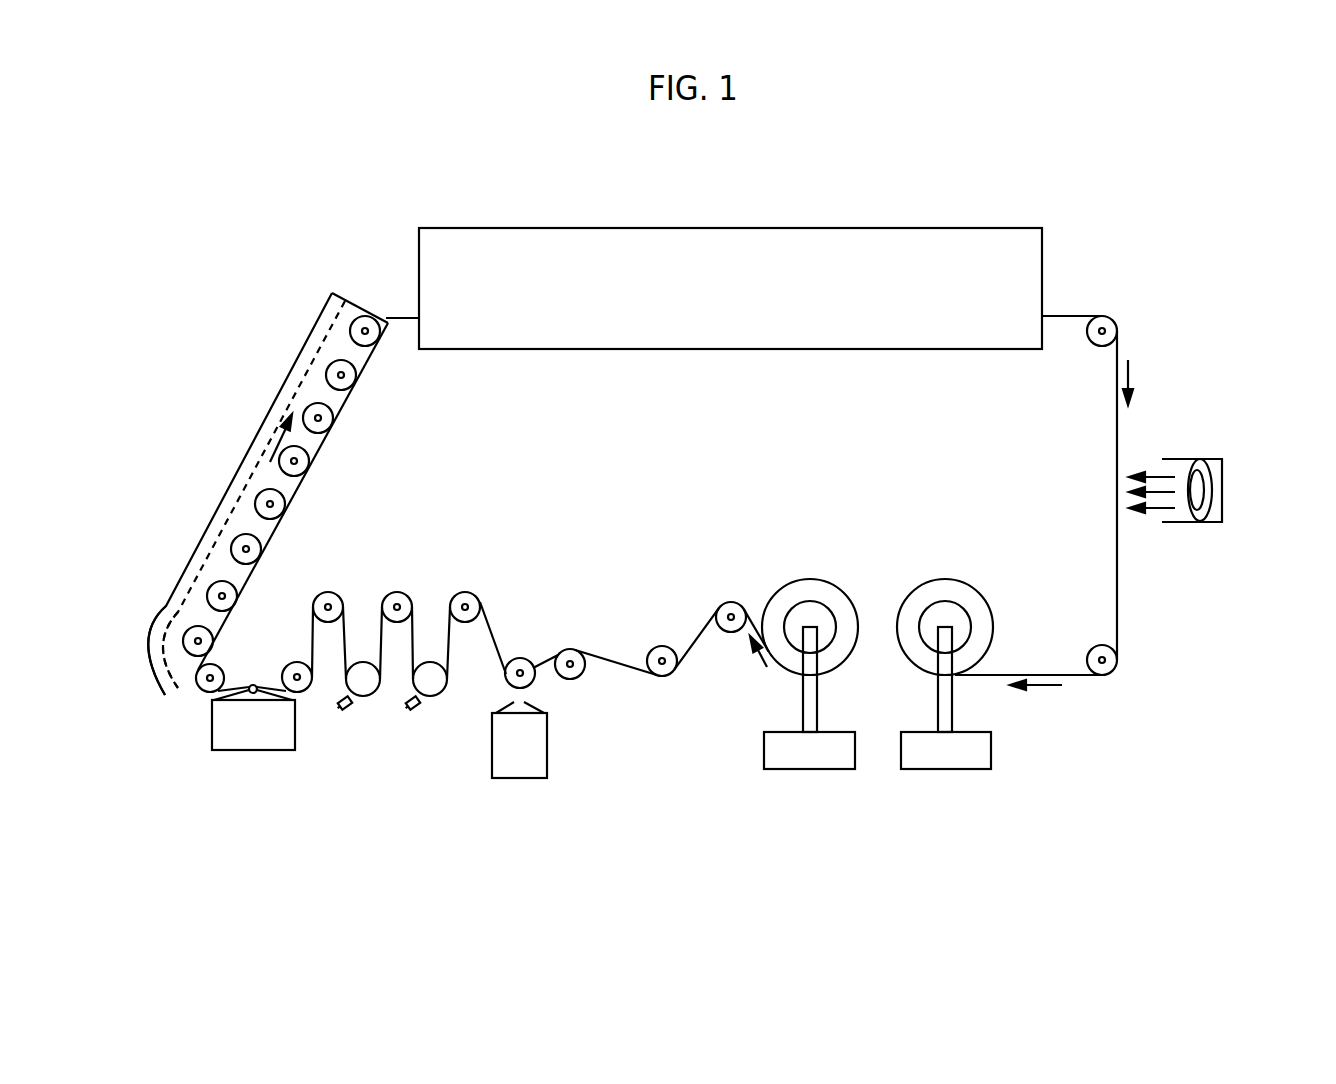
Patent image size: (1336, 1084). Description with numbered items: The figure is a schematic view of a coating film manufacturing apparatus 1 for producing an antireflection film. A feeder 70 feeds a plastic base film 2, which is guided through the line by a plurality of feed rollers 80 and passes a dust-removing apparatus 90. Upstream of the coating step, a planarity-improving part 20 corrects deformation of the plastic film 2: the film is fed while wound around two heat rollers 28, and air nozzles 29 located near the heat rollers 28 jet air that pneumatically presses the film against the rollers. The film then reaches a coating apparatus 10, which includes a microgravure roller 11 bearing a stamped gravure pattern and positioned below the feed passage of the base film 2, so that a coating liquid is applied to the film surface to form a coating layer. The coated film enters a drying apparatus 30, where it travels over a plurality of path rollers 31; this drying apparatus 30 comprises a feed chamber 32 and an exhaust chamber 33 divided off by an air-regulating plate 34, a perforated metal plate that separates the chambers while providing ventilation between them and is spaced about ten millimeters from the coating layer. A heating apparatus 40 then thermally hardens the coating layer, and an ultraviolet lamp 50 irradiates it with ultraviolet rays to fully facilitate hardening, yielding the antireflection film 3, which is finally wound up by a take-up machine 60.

The coating film manufacturing apparatus 1 is at (665, 823).
The base film 2 is at (693, 640).
The antireflection film 3 is at (1118, 590).
The coating apparatus 10 is at (245, 745).
The microgravure roller 11 is at (250, 692).
The planarity-improving part 20 is at (383, 800).
The heat rollers 28 is at (362, 685).
The air nozzles 29 is at (333, 707).
The drying apparatus 30 is at (245, 452).
The path rollers 31 is at (378, 340).
The feed chamber 32 is at (228, 524).
The exhaust chamber 33 is at (178, 596).
The air-regulating plate 34 is at (162, 638).
The heating apparatus 40 is at (777, 238).
The ultraviolet lamp 50 is at (1217, 490).
The take-up machine 60 is at (945, 760).
The feeder 70 is at (810, 760).
The feed rollers 80 is at (338, 598).
The dust-removing apparatus 90 is at (520, 770).